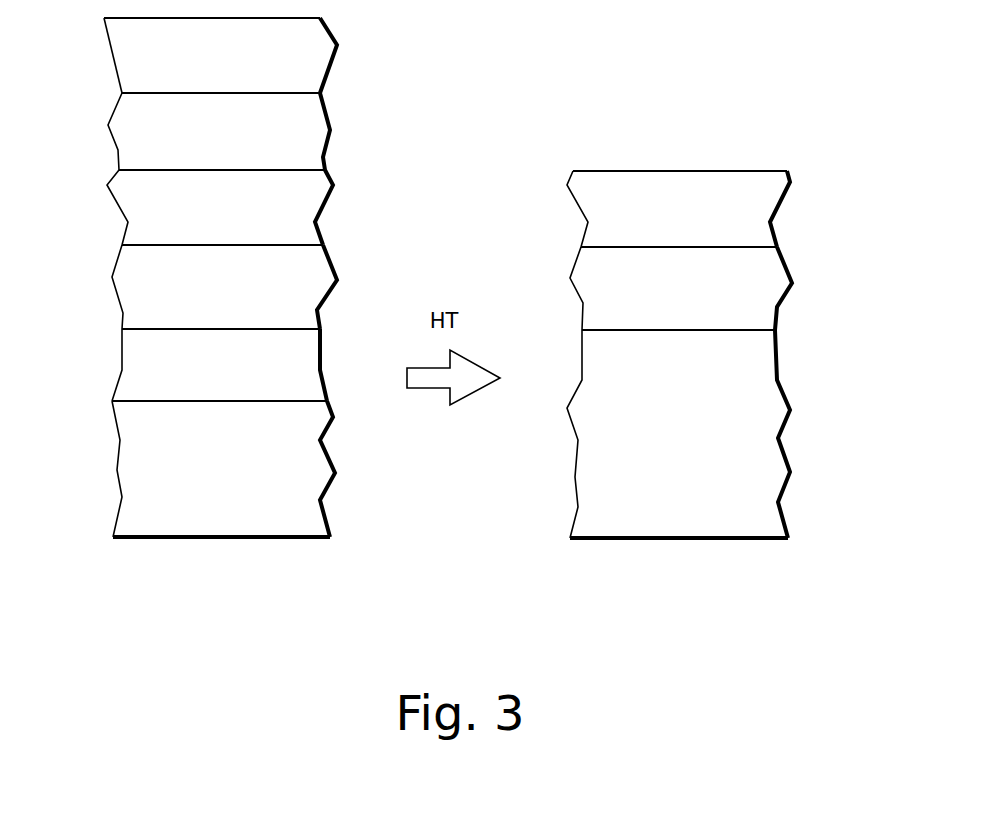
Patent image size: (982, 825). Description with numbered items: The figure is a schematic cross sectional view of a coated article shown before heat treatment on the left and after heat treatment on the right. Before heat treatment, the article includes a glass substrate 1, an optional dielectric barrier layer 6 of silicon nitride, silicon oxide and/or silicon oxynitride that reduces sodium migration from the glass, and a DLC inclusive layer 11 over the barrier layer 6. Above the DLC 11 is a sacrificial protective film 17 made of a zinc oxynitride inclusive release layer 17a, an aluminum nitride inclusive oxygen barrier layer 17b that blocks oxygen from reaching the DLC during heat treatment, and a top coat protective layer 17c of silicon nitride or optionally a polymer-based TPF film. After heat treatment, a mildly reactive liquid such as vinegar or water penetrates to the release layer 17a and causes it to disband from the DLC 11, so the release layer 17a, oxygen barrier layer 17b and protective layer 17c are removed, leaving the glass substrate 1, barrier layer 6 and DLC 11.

The glass substrate 1 is at (317, 465).
The dielectric barrier layer 6 is at (298, 373).
The DLC inclusive layer 11 is at (317, 265).
The sacrificial protective film 17 is at (231, 169).
The release layer 17a is at (312, 200).
The oxygen barrier layer 17b is at (307, 123).
The top coat protective layer 17c is at (307, 62).